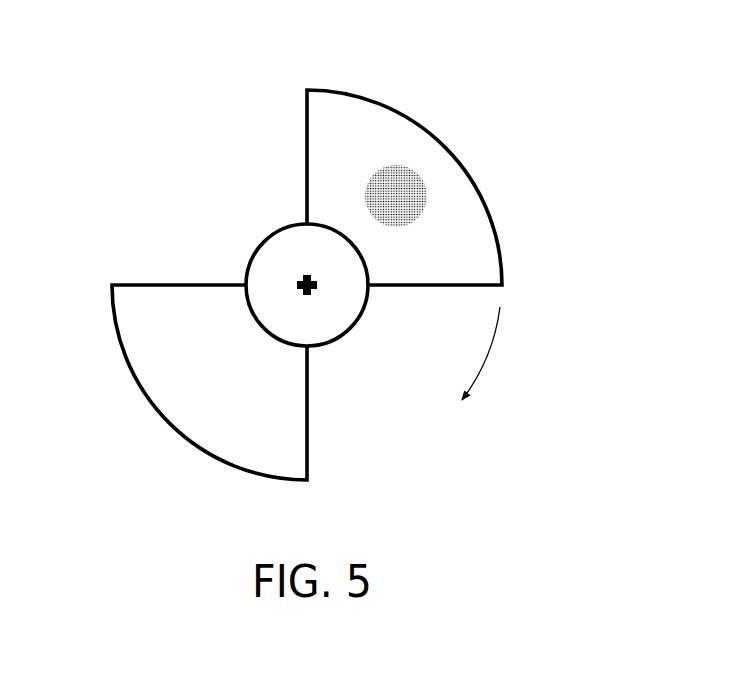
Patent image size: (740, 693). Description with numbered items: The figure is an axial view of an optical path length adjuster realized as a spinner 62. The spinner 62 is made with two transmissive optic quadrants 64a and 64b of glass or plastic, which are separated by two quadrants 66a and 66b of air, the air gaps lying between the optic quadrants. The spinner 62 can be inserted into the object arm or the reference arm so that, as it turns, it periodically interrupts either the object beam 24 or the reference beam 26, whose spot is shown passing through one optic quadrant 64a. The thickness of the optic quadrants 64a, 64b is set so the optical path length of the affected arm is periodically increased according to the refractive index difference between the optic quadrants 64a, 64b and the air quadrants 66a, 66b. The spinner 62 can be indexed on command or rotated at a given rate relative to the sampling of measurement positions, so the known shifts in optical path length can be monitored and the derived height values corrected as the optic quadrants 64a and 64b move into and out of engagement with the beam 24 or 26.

The spinner 62 is at (286, 221).
The optic quadrant 64a is at (378, 100).
The optic quadrant 64b is at (146, 399).
The object beam 24 is at (426, 192).
The reference beam 26 is at (396, 196).
The air quadrant 66a is at (413, 410).
The air quadrant 66b is at (160, 217).